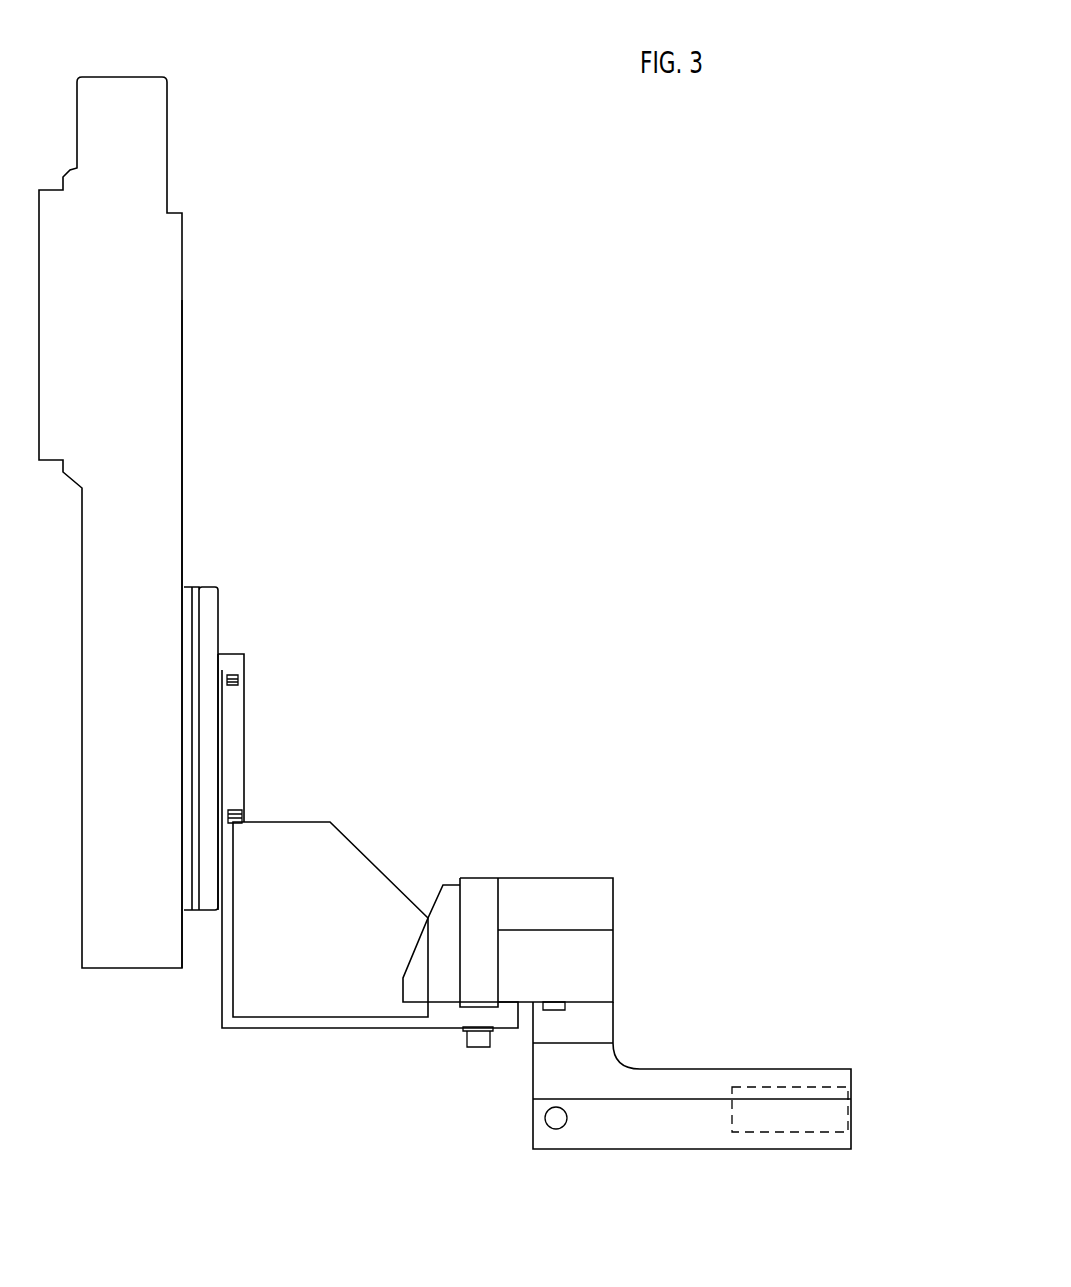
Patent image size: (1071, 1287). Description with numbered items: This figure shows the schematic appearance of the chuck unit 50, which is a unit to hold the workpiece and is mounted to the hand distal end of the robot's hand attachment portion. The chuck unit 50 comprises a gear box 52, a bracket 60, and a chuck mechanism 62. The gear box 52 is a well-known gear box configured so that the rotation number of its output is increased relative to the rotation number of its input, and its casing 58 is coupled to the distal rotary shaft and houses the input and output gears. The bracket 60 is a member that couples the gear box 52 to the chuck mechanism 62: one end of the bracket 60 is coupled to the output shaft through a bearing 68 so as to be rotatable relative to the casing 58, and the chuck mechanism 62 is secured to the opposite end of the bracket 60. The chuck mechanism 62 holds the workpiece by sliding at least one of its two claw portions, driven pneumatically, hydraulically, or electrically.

The chuck unit 50 is at (483, 337).
The gear box 52 is at (162, 228).
The casing 58 is at (183, 428).
The bracket 60 is at (305, 840).
The chuck mechanism 62 is at (683, 1088).
The bearing 68 is at (206, 633).